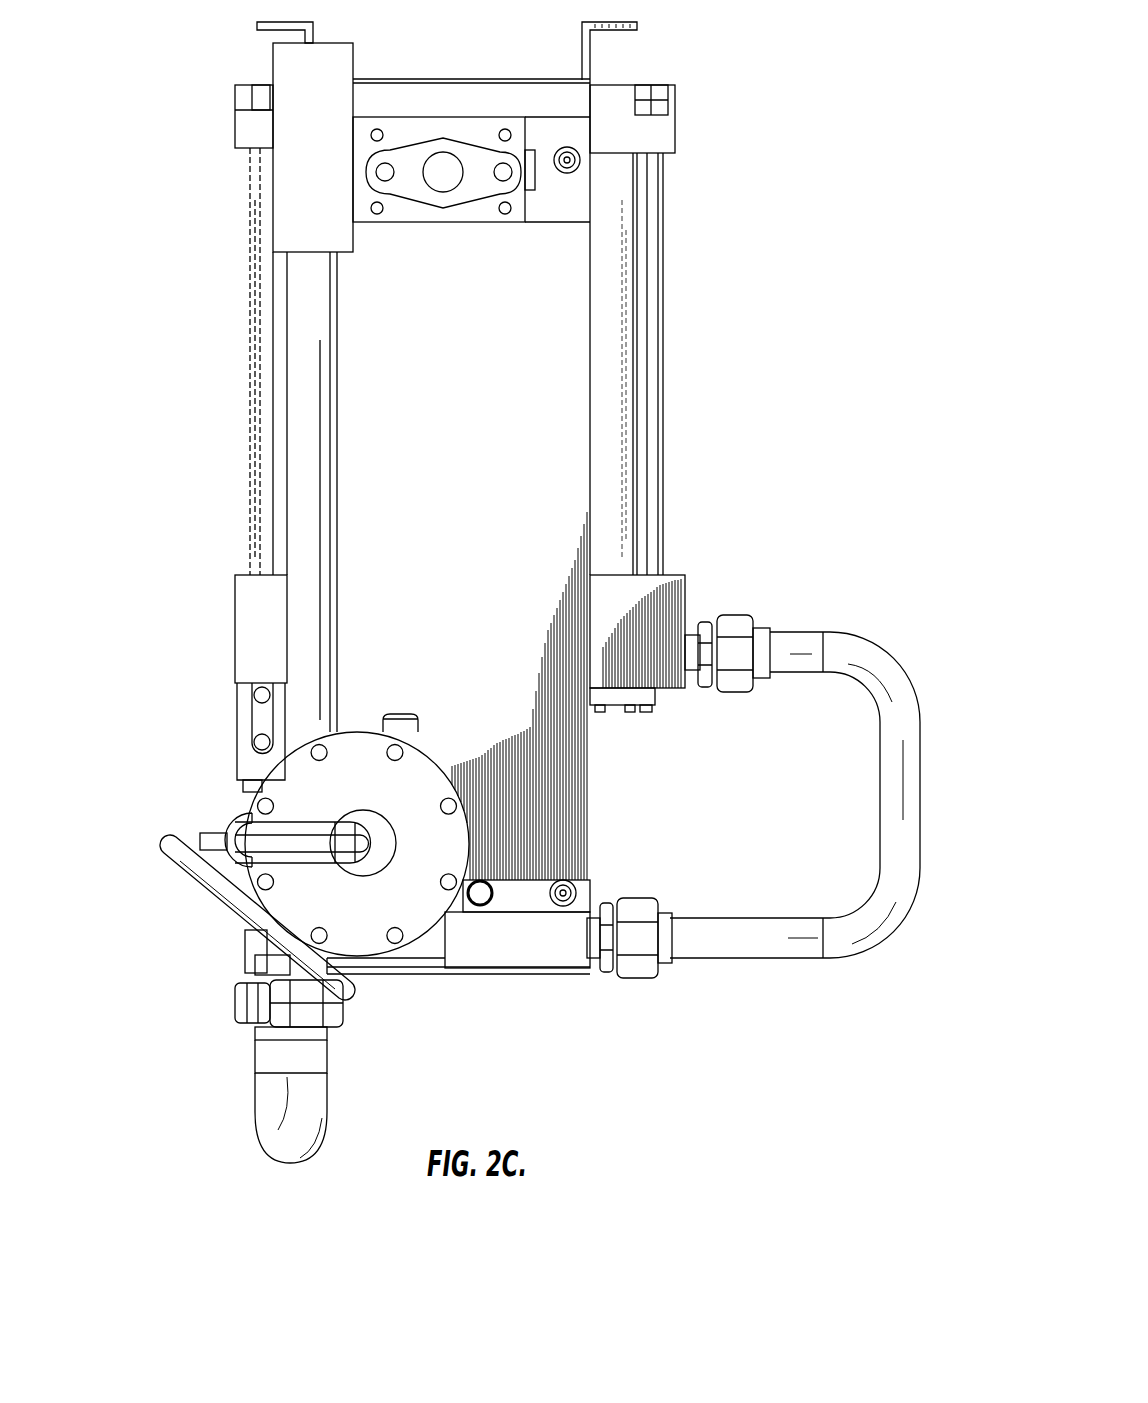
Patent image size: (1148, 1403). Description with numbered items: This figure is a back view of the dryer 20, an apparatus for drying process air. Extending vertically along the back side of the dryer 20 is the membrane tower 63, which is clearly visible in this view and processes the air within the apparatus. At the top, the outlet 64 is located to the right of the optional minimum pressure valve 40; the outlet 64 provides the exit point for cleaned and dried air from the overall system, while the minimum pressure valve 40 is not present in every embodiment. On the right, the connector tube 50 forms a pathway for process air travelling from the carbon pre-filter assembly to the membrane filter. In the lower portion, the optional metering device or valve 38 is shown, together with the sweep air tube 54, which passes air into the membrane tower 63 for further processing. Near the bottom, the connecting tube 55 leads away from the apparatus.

The dryer 20 is at (532, 591).
The metering device or valve 38 is at (412, 912).
The minimum pressure valve 40 is at (293, 78).
The connector tube 50 is at (872, 658).
The sweep air tube 54 is at (192, 862).
The connecting tube 55 is at (262, 1088).
The membrane tower 63 is at (568, 328).
The outlet 64 is at (445, 165).